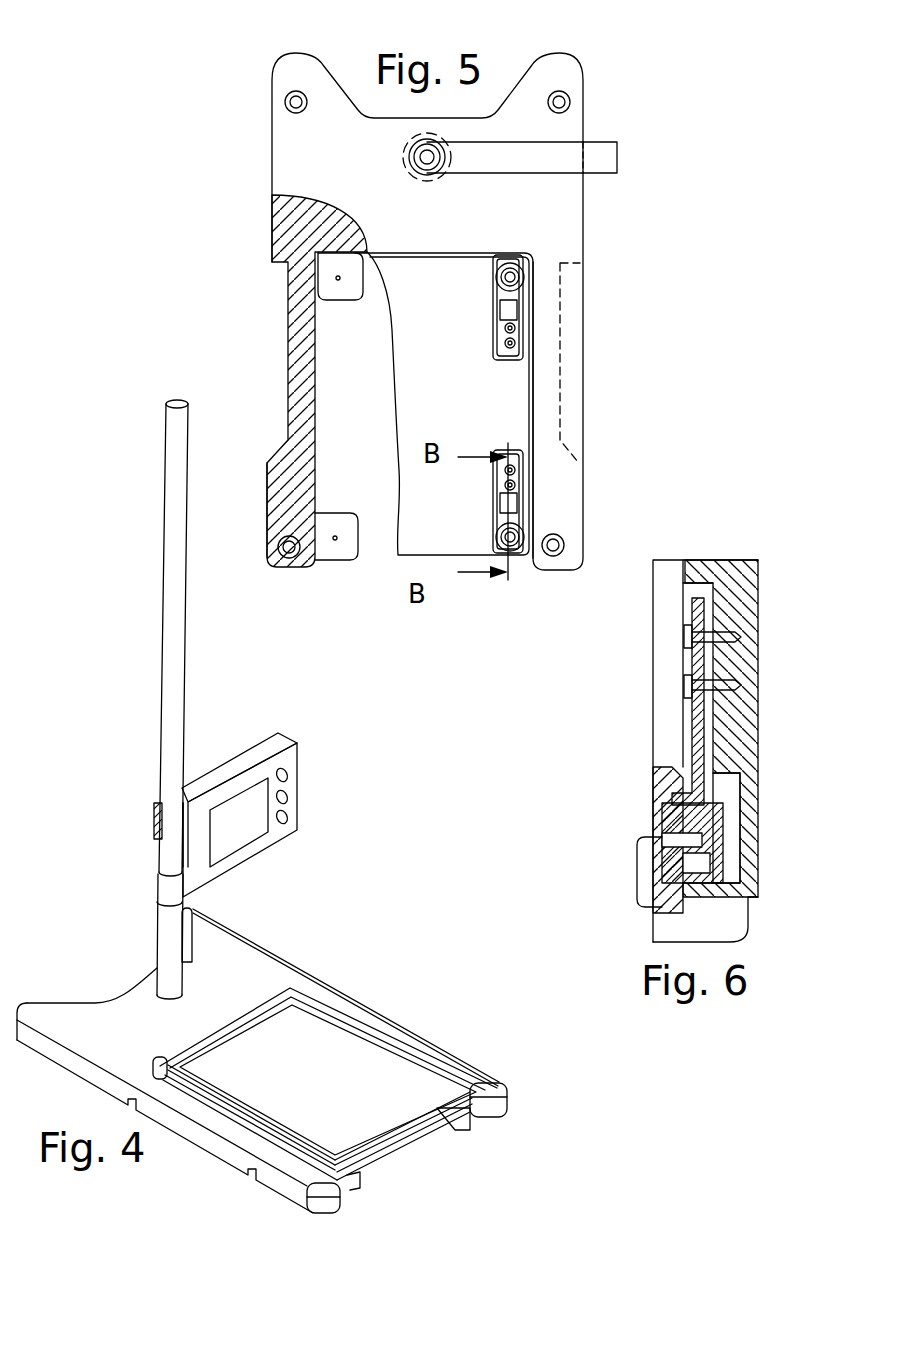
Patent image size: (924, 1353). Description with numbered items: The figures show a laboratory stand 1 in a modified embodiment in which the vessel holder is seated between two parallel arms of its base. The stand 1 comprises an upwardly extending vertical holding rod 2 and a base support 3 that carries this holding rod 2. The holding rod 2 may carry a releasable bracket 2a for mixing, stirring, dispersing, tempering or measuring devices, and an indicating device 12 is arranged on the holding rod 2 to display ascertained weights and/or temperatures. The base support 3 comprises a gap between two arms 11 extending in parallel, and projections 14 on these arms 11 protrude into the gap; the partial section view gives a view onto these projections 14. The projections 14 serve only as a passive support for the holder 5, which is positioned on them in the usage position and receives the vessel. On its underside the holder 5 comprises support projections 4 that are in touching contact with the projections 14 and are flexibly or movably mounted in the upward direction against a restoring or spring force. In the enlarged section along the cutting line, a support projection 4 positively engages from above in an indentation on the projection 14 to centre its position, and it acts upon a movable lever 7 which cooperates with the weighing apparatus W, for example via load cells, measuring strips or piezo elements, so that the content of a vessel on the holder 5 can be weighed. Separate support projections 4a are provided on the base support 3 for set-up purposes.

In FIG. 4, the stand 1 is at (132, 736).
In FIG. 5, the holding rod 2 is at (405, 157).
In FIG. 4, the holding rod 2 is at (173, 650).
In FIG. 4, the releasable bracket 2a is at (153, 822).
In FIG. 5, the base support 3 is at (284, 313).
In FIG. 4, the base support 3 is at (350, 977).
In FIG. 6, the base support 3 is at (644, 794).
In FIG. 6, the support projection 4 is at (673, 820).
In FIG. 5, the support projection 4a is at (284, 100).
In FIG. 6, the support projection 4a is at (647, 868).
In FIG. 5, the holder 5 is at (398, 535).
In FIG. 4, the holder 5 is at (363, 1053).
In FIG. 6, the holder 5 is at (741, 591).
In FIG. 6, the lever 7 is at (700, 754).
In FIG. 5, the arm 11 is at (272, 455).
In FIG. 4, the arm 11 is at (430, 1050).
In FIG. 6, the arm 11 is at (656, 710).
In FIG. 5, the indicating device 12 is at (550, 140).
In FIG. 4, the indicating device 12 is at (245, 780).
In FIG. 5, the projection 14 is at (342, 290).
In FIG. 6, the projection 14 is at (650, 931).
In FIG. 6, the weighing apparatus W is at (667, 812).